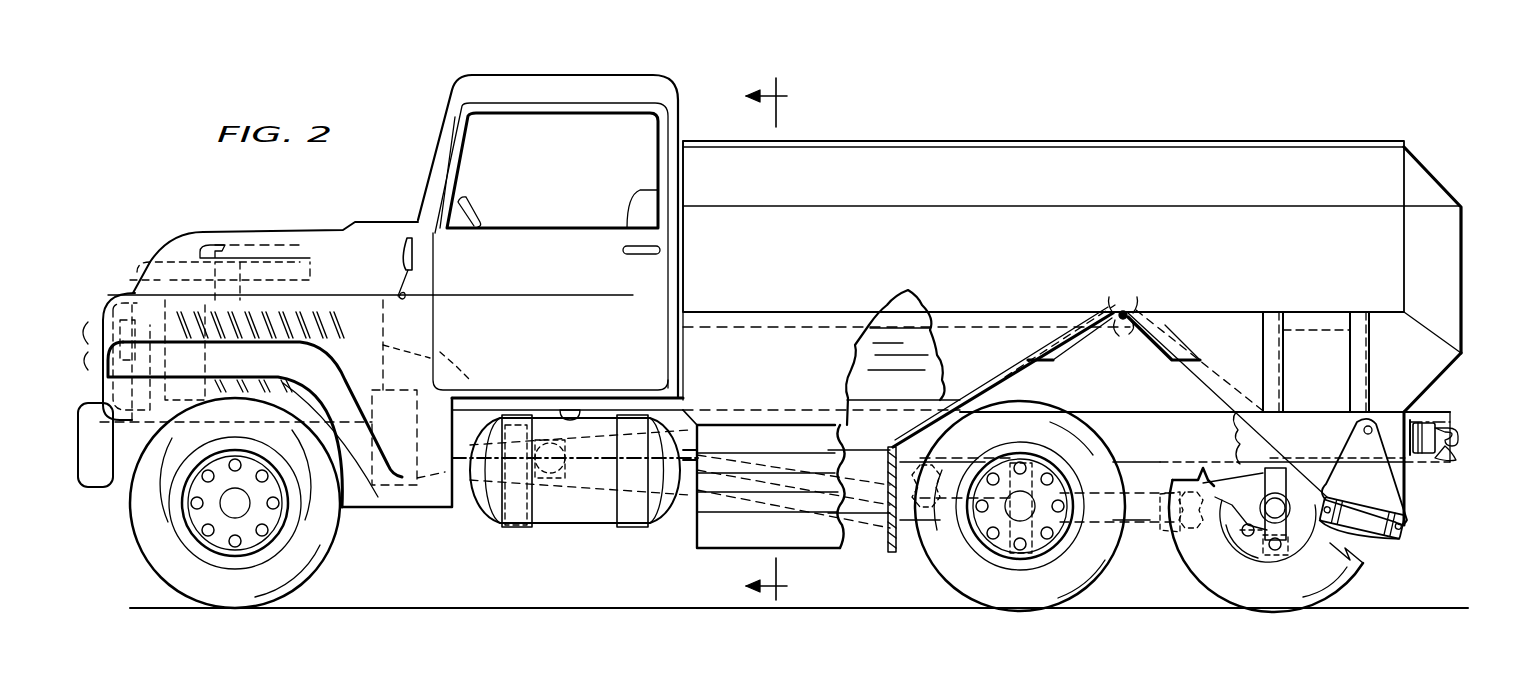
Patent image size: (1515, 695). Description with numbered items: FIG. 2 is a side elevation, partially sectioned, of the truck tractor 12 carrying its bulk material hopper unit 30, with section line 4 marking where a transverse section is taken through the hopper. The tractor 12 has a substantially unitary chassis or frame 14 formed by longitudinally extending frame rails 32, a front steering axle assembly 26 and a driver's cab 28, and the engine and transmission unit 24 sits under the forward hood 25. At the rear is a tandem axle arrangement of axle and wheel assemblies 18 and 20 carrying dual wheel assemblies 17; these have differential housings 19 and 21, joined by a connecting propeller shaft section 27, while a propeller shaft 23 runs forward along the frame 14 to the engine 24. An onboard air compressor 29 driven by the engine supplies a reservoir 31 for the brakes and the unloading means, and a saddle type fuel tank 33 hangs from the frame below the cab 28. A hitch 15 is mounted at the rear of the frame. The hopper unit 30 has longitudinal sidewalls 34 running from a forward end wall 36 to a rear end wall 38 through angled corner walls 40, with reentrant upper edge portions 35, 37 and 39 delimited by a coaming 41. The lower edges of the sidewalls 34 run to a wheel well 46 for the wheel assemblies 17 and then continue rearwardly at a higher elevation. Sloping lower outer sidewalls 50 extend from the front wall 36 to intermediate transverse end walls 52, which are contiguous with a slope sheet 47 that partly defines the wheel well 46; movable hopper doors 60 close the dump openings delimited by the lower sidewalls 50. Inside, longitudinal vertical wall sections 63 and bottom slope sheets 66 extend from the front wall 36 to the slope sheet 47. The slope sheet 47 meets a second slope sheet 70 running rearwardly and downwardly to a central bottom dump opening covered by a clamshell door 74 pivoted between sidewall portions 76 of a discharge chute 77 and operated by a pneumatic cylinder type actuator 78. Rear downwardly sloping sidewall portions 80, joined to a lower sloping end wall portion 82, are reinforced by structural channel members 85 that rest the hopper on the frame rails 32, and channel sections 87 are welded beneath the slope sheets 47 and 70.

The truck tractor 12 is at (600, 75).
The chassis or frame 14 is at (1205, 410).
The hitch 15 is at (1446, 458).
The dual wheel assemblies 17 is at (1026, 424).
The axle and wheel assembly 18 is at (1085, 545).
The differential housing 19 is at (1058, 460).
The axle and wheel assembly 20 is at (1207, 548).
The differential housing 21 is at (1238, 495).
The propeller shaft 23 is at (690, 500).
The engine and transmission unit 24 is at (388, 300).
The forward hood 25 is at (231, 232).
The front steering axle assembly 26 is at (318, 528).
The connecting propeller shaft section 27 is at (1136, 508).
The driver's cab 28 is at (528, 78).
The onboard air compressor 29 is at (215, 357).
The hopper unit 30 is at (1000, 162).
The reservoir 31 is at (422, 392).
The frame rails 32 is at (1238, 415).
The saddle type fuel tanks 33 is at (578, 512).
The longitudinal sidewalls 34 is at (997, 276).
The reentrant upper edge portion 35 is at (1168, 165).
The forward end wall 36 is at (664, 298).
The reentrant upper edge portion 37 is at (1418, 176).
The rear end wall 38 is at (1464, 300).
The reentrant upper edge portion 39 is at (1422, 192).
The angled corner walls 40 is at (1442, 233).
The coaming 41 is at (1318, 144).
The wheel well 46 is at (1122, 386).
The slope sheet 47 is at (970, 403).
The sloping lower outer sidewalls 50 is at (722, 530).
The intermediate transverse end walls 52 is at (897, 533).
The hopper doors 60 is at (862, 500).
The longitudinal vertical wall sections 63 is at (852, 410).
The bottom slope sheets 66 is at (878, 340).
The second slope sheet 70 is at (1187, 335).
The clamshell door 74 is at (1388, 516).
The sidewall portions 76 is at (1438, 414).
The discharge chute 77 is at (1408, 510).
The pneumatic cylinder type actuator 78 is at (1350, 540).
The downwardly sloping sidewall portions 80 is at (1322, 322).
The lower sloping end wall portion 82 is at (1420, 405).
The structural channel members 85 is at (1314, 396).
The channel sections 87 is at (1126, 312).
The section line 4- 4 is at (770, 344).